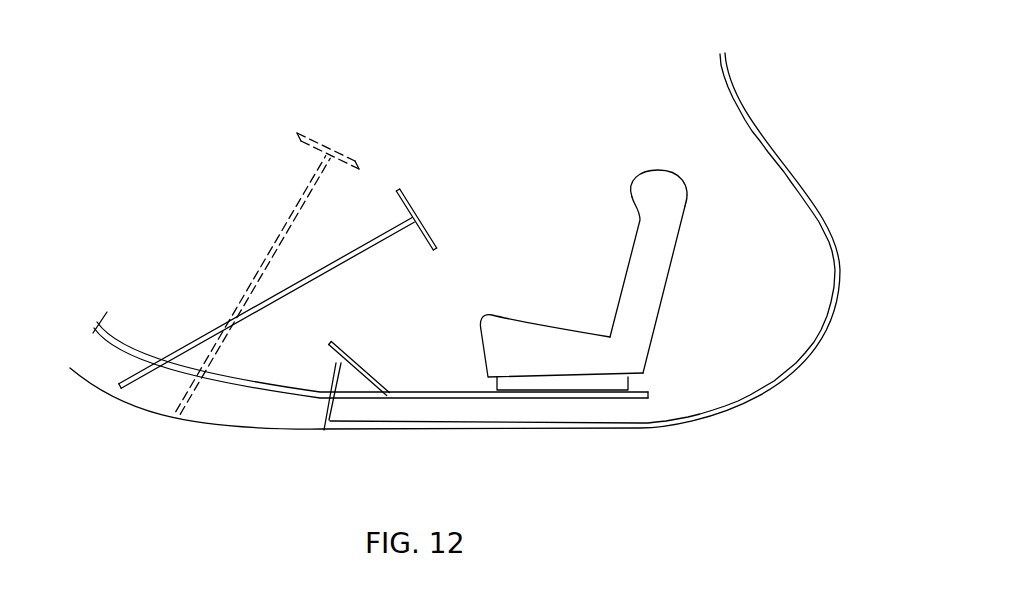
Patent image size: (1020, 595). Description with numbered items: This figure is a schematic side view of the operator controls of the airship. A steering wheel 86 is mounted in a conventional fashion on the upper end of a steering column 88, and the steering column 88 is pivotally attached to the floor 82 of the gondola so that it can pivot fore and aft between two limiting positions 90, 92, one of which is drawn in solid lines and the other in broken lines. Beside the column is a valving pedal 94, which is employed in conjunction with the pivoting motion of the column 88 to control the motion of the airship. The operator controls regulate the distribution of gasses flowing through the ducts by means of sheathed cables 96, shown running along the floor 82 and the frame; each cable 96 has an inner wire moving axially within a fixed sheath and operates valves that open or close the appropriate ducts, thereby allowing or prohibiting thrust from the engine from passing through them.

The floor 82 is at (140, 338).
The steering wheel 86 is at (415, 212).
The steering column 88 is at (258, 276).
The limiting position 90 is at (293, 217).
The limiting position 92 is at (395, 225).
The valving pedal 94 is at (345, 362).
The sheathed cables 96 is at (147, 408).